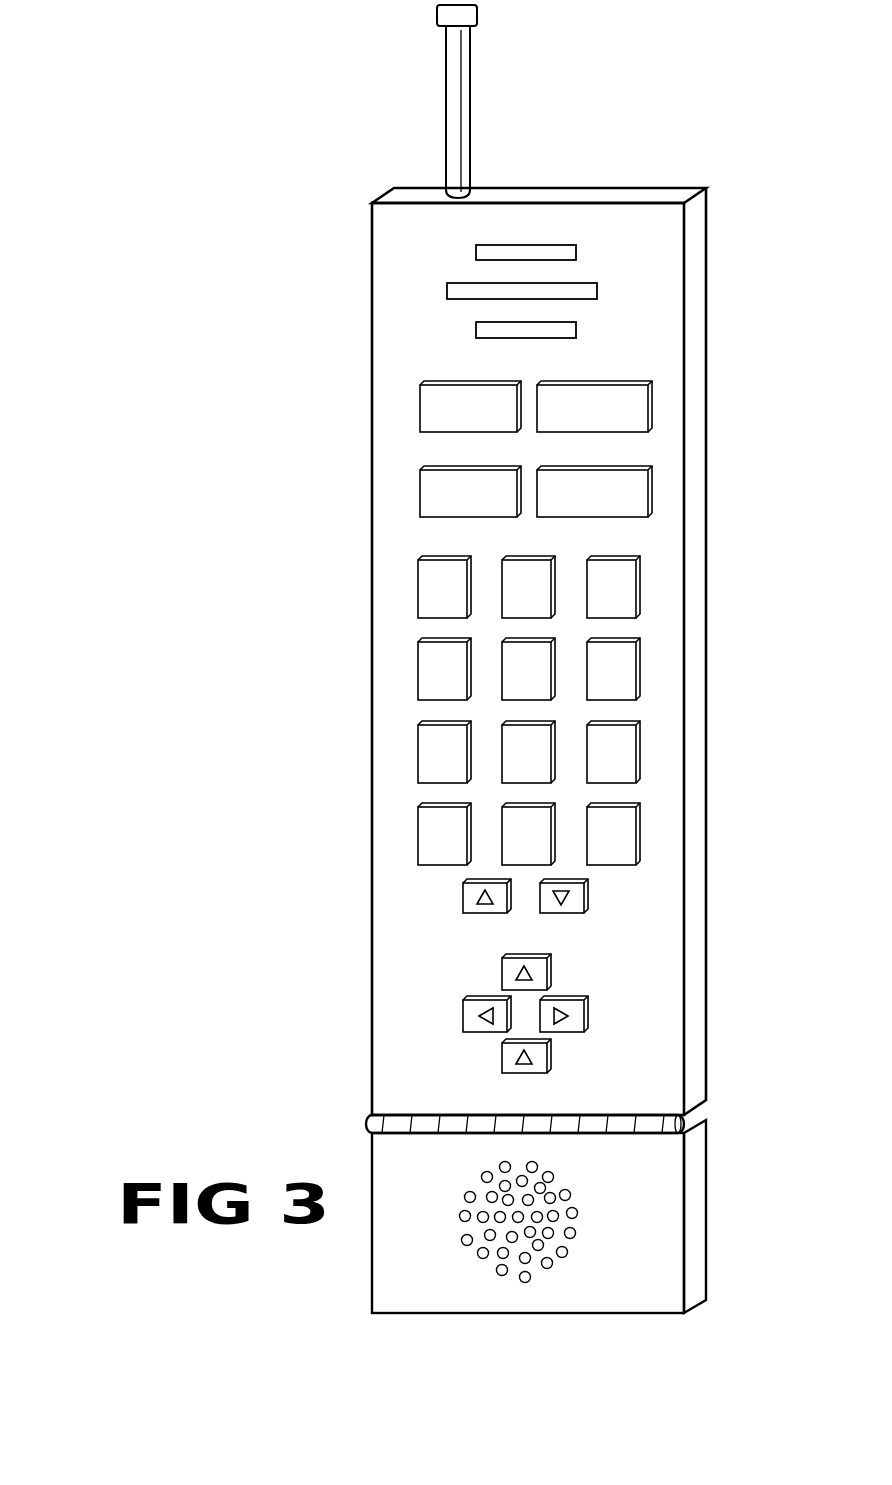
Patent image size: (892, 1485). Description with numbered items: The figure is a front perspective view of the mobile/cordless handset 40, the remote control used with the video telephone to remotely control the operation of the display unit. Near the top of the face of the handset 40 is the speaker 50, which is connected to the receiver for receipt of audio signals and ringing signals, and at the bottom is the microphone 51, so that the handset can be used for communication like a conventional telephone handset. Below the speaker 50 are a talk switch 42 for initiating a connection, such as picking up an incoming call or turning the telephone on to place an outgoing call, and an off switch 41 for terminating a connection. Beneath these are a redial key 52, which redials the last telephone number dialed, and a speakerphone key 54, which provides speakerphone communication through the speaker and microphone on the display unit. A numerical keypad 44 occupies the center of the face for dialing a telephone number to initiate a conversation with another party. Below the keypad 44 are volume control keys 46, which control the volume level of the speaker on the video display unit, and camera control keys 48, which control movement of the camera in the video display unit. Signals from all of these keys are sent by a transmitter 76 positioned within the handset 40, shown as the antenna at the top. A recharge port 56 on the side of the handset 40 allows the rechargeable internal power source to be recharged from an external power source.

The mobile/cordless handset 40 is at (570, 180).
The transmitter 76 is at (452, 85).
The speaker 50 is at (590, 292).
The talk switch 42 is at (420, 398).
The off switch 41 is at (640, 403).
The redial key 52 is at (420, 475).
The speakerphone key 54 is at (643, 478).
The numerical keypad 44 is at (408, 670).
The volume control keys 46 is at (463, 893).
The camera control keys 48 is at (502, 968).
The recharge port 56 is at (693, 849).
The microphone 51 is at (465, 1244).